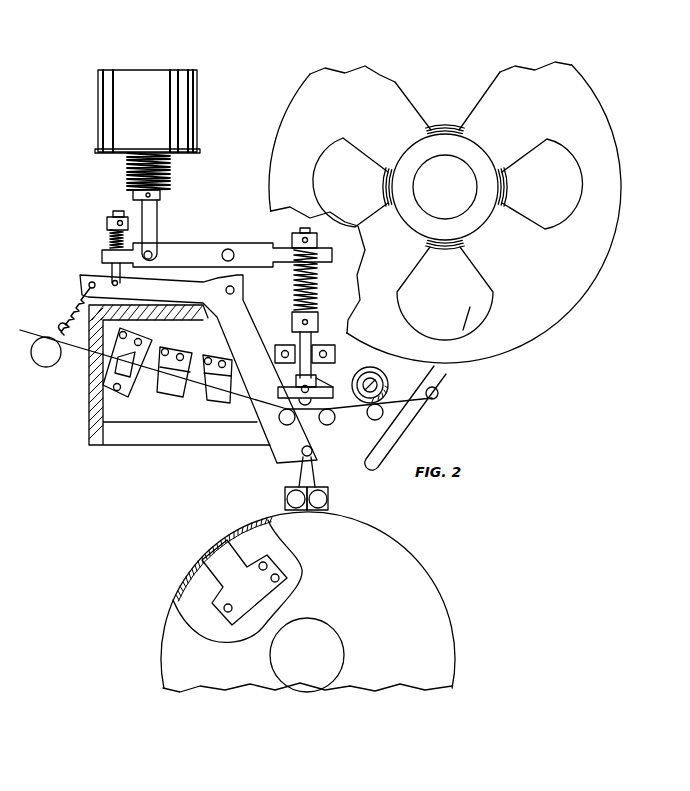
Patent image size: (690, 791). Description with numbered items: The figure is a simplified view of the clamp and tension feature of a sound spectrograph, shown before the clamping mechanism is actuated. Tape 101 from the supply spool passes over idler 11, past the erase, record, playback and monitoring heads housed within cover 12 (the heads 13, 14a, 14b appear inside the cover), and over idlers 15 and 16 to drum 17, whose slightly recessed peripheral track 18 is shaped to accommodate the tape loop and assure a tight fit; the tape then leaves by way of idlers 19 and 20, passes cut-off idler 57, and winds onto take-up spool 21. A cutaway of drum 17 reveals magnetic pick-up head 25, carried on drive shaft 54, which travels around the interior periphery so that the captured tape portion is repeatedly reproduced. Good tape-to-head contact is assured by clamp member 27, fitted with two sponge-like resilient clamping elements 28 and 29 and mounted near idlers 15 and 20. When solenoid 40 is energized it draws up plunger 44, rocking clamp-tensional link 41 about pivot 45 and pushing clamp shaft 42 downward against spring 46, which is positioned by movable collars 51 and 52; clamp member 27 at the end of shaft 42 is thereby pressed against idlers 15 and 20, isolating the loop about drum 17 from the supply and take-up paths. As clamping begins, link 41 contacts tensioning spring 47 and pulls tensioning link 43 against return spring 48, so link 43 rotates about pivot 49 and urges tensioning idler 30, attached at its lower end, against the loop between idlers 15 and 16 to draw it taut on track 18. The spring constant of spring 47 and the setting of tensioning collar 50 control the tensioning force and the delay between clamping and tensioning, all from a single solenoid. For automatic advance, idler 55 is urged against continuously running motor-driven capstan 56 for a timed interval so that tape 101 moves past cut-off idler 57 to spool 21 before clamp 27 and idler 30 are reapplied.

The solenoid 40 is at (200, 128).
The drive shaft 54 is at (170, 178).
The plunger 44 is at (160, 220).
The clamp-tensional link 41 is at (170, 245).
The pivot 45 is at (230, 248).
The tensioning collar 50 is at (108, 220).
The tensioning spring 47 is at (110, 240).
The tensioning link 43 is at (165, 288).
The pivot 49 is at (237, 291).
The return spring 48 is at (63, 303).
The idler 11 is at (47, 360).
The cover 12 is at (108, 413).
The magnetic head 13 is at (127, 358).
The head 14a is at (174, 393).
The head 14b is at (218, 403).
The clamp shaft 42 is at (298, 338).
The movable collar 52 is at (322, 323).
The spring 46 is at (320, 282).
The movable collar 51 is at (318, 243).
The resilient clamping element 28 is at (280, 392).
The clamp member 27 is at (339, 379).
The resilient clamping element 29 is at (328, 398).
The idler 15 is at (290, 417).
The idler 20 is at (332, 417).
The capstan 56 is at (372, 419).
The idler 55 is at (377, 378).
The cut-off idler 57 is at (438, 393).
The tensioning idler 30 is at (312, 455).
The idler 16 is at (284, 500).
The idler 19 is at (329, 498).
The drum 17 is at (377, 535).
The peripheral track 18 is at (177, 580).
The magnetic pick-up head 25 is at (230, 555).
The take-up spool 21 is at (547, 318).
The tape 101 is at (454, 314).